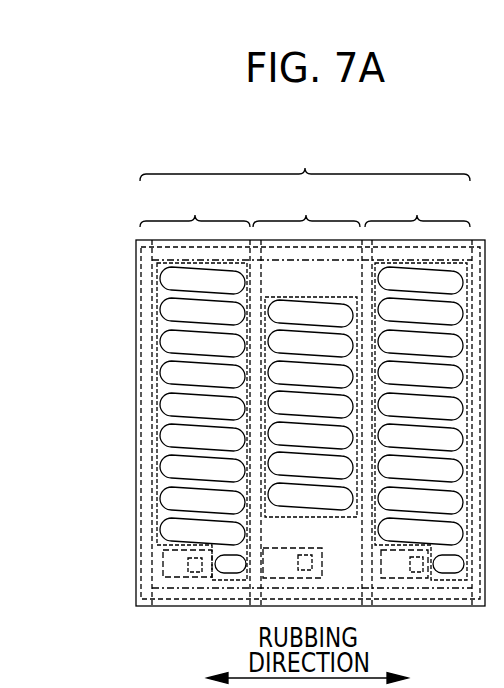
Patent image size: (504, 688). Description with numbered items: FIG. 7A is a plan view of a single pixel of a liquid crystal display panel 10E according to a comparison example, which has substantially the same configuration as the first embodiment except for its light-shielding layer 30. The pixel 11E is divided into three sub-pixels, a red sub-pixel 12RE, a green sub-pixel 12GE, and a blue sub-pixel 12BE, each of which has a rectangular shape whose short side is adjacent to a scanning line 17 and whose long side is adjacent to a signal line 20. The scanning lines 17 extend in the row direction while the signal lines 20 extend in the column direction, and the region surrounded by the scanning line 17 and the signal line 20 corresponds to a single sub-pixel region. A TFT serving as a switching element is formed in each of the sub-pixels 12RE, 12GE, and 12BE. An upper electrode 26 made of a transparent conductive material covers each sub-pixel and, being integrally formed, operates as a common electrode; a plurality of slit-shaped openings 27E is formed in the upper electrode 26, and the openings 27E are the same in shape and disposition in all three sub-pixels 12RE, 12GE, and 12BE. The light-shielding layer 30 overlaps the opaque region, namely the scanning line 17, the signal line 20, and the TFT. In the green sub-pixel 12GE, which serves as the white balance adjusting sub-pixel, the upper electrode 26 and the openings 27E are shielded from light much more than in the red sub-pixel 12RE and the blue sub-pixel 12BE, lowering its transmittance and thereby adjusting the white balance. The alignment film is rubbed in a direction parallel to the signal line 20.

The liquid crystal display panel 10E is at (223, 115).
The pixel group 11E is at (267, 360).
The red sub-pixel 12RE is at (157, 381).
The green sub-pixel 12GE is at (306, 380).
The blue sub-pixel 12BE is at (417, 381).
The scanning line 17 is at (165, 249).
The signal line 20 is at (152, 466).
The upper electrode 26 is at (160, 384).
The slit-shaped openings 27E is at (172, 431).
The light-shielding layer 30 is at (141, 496).
The element TFT is at (165, 558).